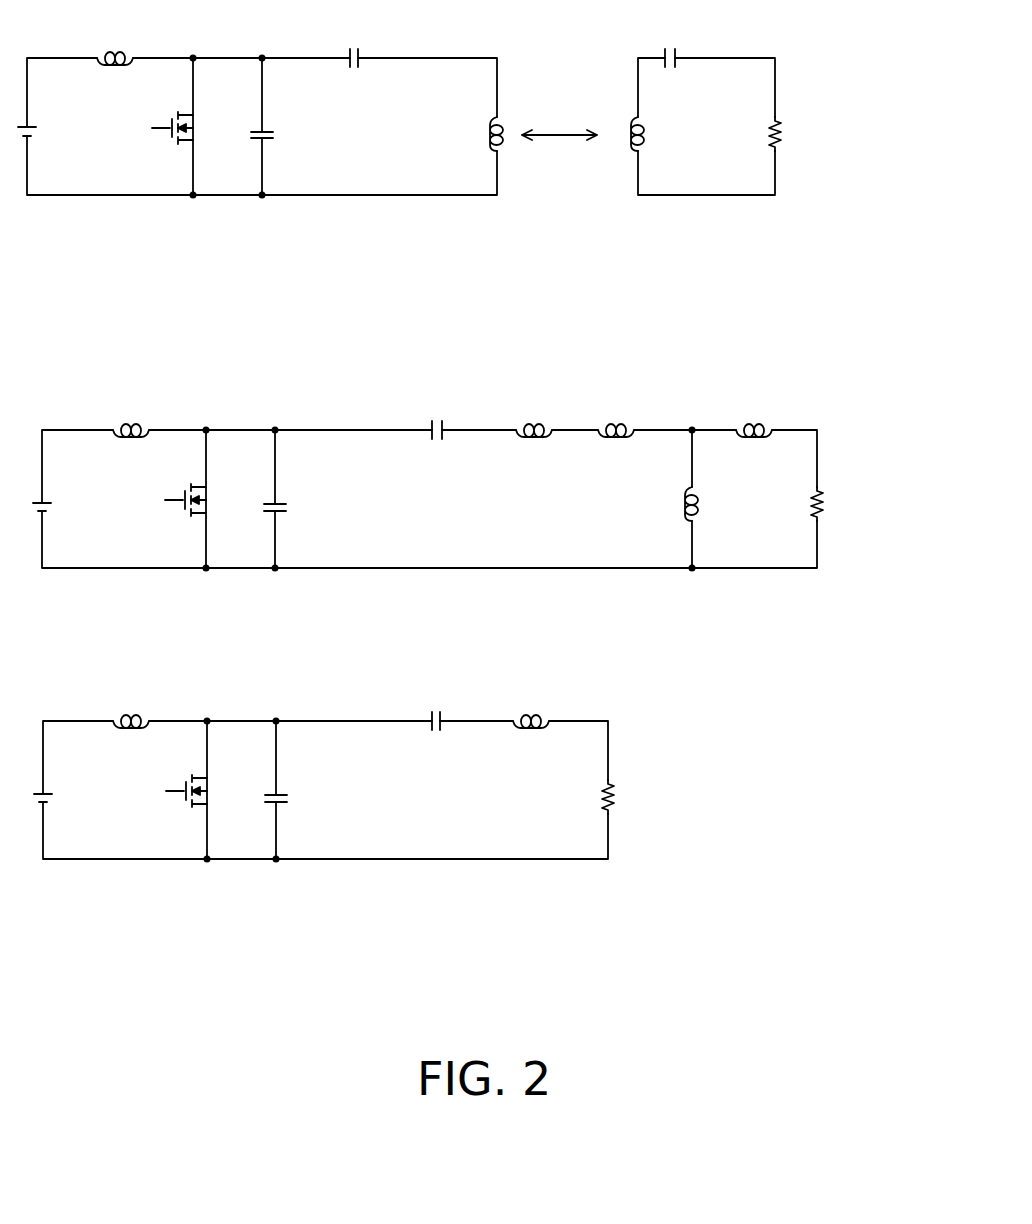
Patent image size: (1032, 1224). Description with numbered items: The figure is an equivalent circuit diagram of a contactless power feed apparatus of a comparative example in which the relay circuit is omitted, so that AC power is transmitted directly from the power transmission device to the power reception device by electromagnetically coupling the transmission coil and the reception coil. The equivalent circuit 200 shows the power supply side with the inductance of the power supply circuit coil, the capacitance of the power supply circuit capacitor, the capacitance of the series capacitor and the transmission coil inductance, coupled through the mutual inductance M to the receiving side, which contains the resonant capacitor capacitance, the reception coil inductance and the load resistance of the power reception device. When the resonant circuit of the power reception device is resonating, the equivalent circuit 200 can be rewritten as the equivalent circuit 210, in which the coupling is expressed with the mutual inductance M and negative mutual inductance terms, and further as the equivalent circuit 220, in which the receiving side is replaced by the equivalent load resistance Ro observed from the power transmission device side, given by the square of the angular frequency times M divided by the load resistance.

The equivalent circuit 200 is at (808, 248).
The equivalent circuit 210 is at (857, 582).
The equivalent circuit 220 is at (768, 905).